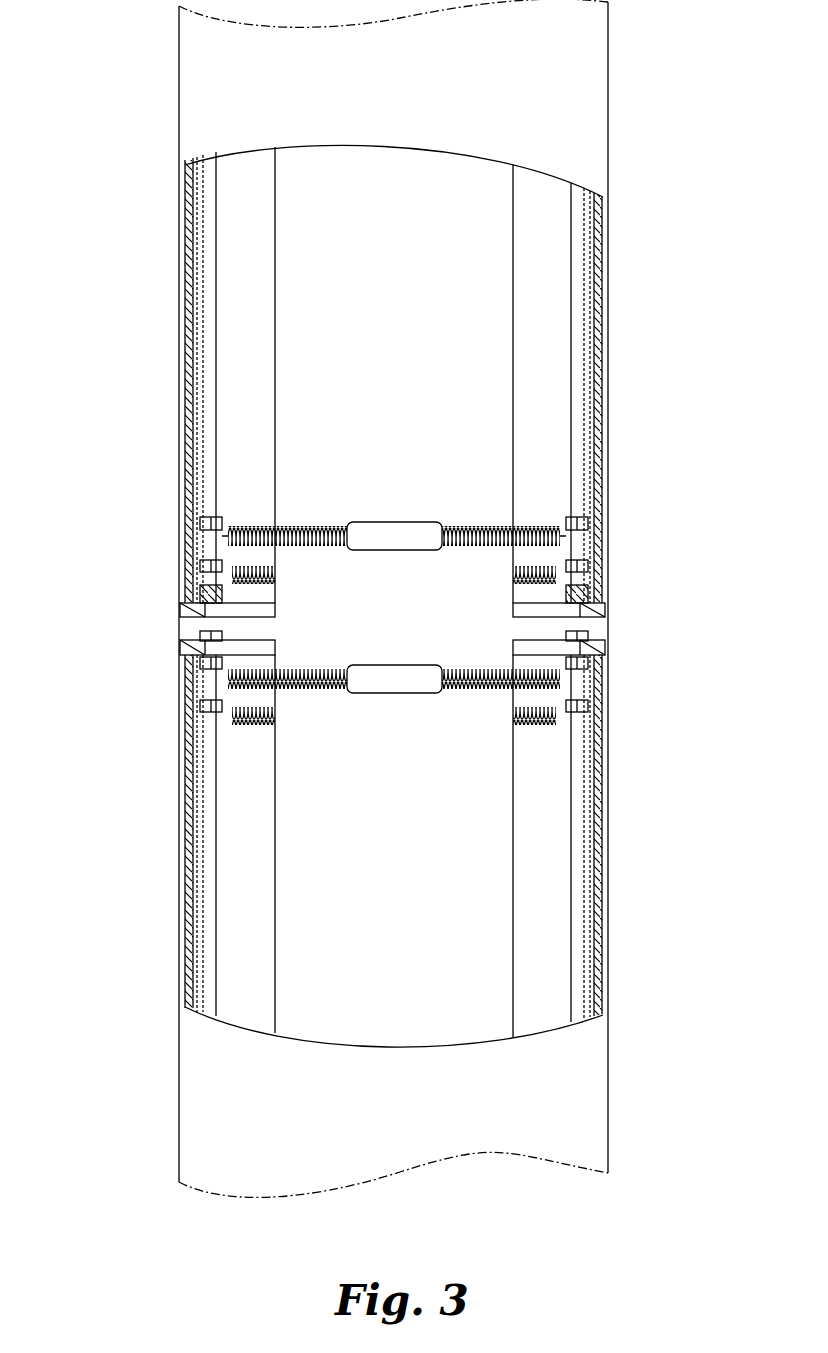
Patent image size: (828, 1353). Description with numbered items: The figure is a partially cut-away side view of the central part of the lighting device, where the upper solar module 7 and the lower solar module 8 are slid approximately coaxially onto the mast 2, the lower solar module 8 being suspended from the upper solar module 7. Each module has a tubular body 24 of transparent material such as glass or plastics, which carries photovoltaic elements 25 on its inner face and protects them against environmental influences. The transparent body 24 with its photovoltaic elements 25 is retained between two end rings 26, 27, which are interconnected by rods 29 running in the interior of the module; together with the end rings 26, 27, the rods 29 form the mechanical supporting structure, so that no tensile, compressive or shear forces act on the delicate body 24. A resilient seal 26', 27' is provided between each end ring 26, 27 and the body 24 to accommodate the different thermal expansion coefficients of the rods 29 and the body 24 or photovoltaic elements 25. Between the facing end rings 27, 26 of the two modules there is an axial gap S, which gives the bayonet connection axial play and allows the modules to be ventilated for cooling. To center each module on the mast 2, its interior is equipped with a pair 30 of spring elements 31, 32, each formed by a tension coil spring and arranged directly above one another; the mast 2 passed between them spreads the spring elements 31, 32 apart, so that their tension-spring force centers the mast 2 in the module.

The mast 2 is at (495, 908).
The upper solar module 7 is at (197, 82).
The lower solar module 8 is at (197, 1085).
The tubular body 24 is at (187, 233).
The photovoltaic elements 25 is at (193, 285).
The end ring 26 is at (435, 662).
The resilient seal 26' is at (449, 678).
The end ring 27 is at (435, 595).
The resilient seal 27' is at (449, 573).
The rods 29 is at (207, 335).
The pair of spring elements 30 is at (320, 657).
The spring element 31 is at (235, 540).
The spring element 32 is at (240, 575).
The axial gap S is at (595, 628).